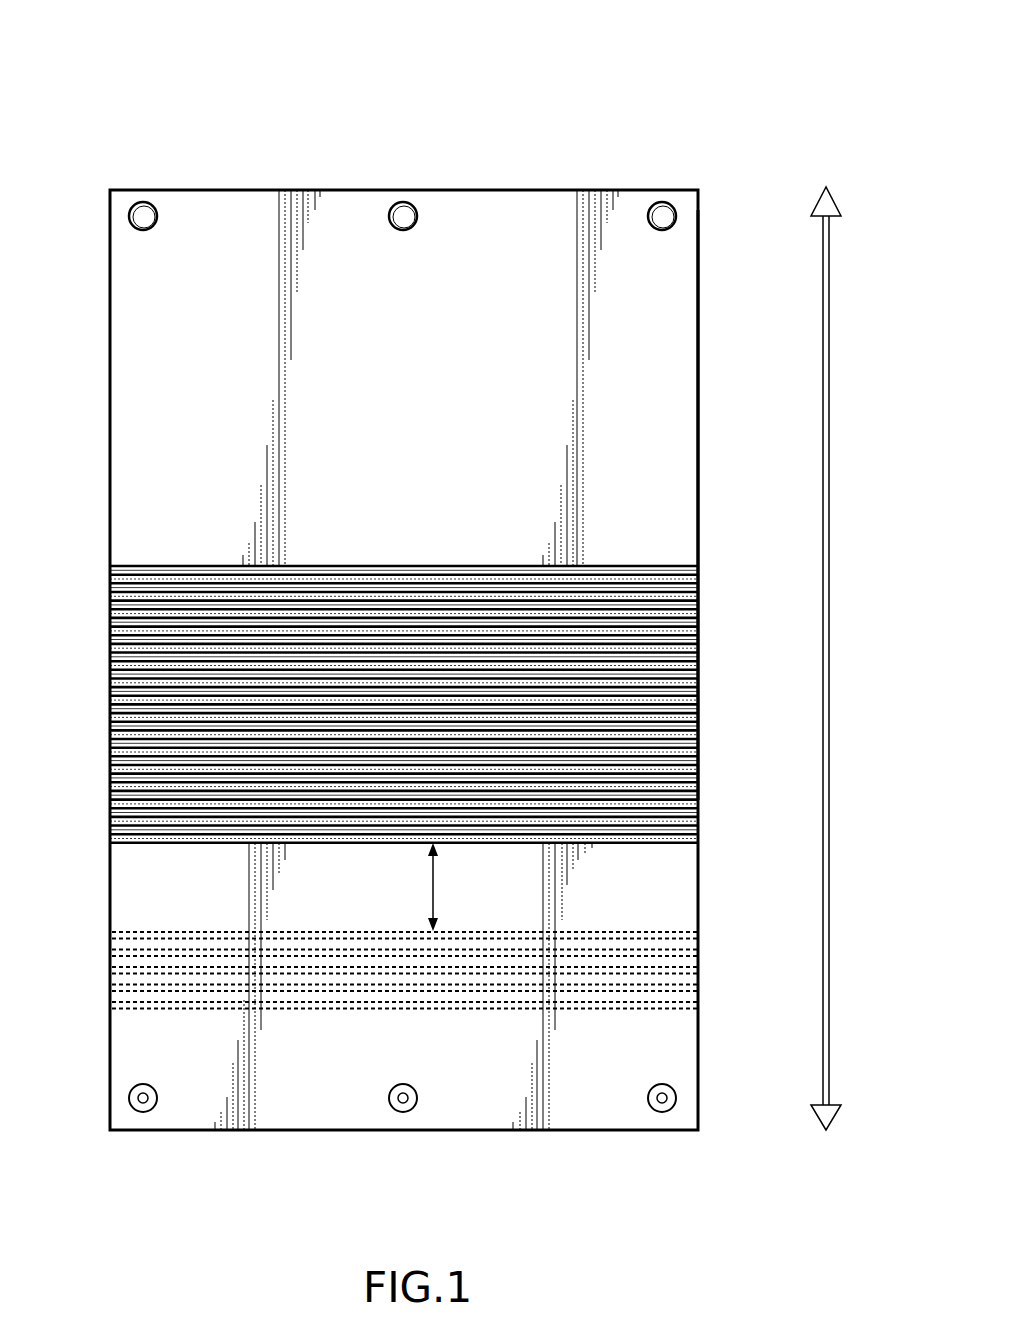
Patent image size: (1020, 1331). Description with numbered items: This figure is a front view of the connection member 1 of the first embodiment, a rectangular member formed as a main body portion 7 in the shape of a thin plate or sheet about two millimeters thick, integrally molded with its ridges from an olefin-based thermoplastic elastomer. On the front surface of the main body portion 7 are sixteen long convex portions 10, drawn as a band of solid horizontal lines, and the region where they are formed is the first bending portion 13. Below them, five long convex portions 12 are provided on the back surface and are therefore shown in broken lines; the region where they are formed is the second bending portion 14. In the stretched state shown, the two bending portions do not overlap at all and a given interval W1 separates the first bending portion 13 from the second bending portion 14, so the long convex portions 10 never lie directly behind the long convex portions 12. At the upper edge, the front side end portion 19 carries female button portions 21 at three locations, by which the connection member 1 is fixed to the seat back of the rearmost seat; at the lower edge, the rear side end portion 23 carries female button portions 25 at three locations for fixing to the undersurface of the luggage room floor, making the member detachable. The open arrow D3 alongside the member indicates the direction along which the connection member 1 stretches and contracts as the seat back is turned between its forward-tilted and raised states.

The connection member 1 is at (518, 76).
The main body portion 7 is at (647, 315).
The long convex portions 10 is at (673, 605).
The long convex portions 12 is at (673, 955).
The first bending portion 13 is at (399, 704).
The second bending portion 14 is at (399, 966).
The front side end portion 19 is at (242, 205).
The female button portions 21 is at (142, 215).
The rear side end portion 23 is at (295, 1110).
The female button portions 25 is at (143, 1113).
The interval W1 is at (458, 887).
The direction D3 is at (830, 307).